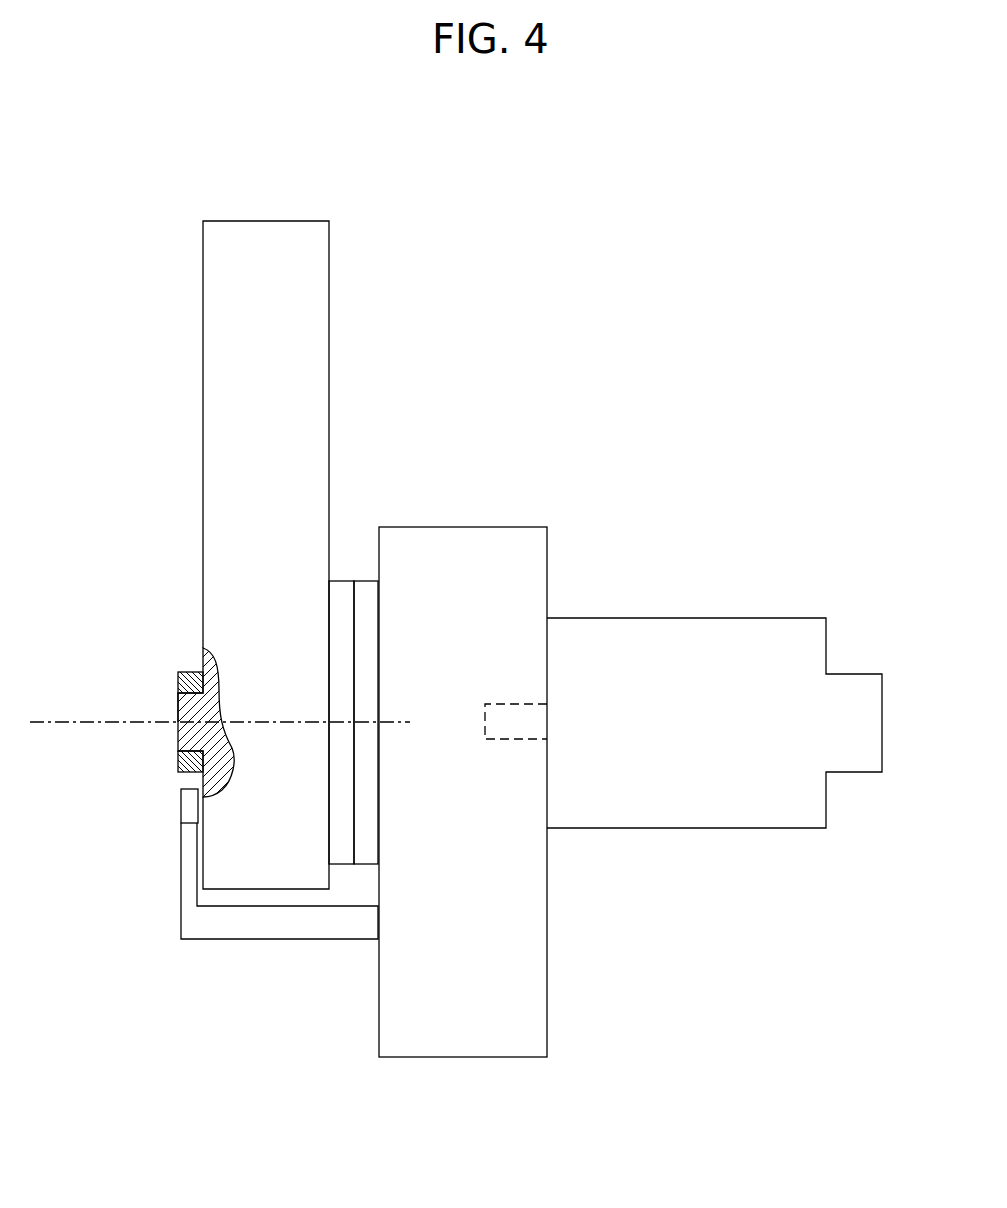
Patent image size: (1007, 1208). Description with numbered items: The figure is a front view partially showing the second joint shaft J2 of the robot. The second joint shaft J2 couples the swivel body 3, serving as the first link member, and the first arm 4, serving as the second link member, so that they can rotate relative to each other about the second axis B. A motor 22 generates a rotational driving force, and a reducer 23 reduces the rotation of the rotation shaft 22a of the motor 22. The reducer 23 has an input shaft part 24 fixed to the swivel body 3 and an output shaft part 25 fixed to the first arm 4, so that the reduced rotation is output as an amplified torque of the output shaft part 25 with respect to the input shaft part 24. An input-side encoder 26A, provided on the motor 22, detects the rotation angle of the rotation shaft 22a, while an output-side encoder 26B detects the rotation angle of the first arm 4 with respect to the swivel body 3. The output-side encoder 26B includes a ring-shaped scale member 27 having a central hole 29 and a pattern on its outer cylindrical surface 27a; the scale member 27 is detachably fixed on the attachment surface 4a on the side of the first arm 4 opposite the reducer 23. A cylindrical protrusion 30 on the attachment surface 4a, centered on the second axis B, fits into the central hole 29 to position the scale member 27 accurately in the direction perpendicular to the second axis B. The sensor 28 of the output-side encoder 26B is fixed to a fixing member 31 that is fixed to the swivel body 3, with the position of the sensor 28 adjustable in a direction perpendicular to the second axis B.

The first arm 4 is at (203, 407).
The attachment surface 4a is at (189, 672).
The output shaft part 25 is at (343, 580).
The input shaft part 24 is at (364, 580).
The swivel body 3 is at (468, 527).
The motor 22 is at (680, 618).
The rotation shaft 22a is at (510, 704).
The input-side encoder 26A is at (890, 686).
The output-side encoder 26B is at (155, 773).
The scale member 27 is at (177, 677).
The cylindrical surface 27a is at (187, 776).
The central hole 29 is at (178, 708).
The protrusion 30 is at (178, 730).
The sensor 28 is at (181, 808).
The fixing member 31 is at (230, 940).
The reducer 23 is at (352, 878).
The second joint shaft J2 is at (495, 268).
The second axis B is at (53, 722).